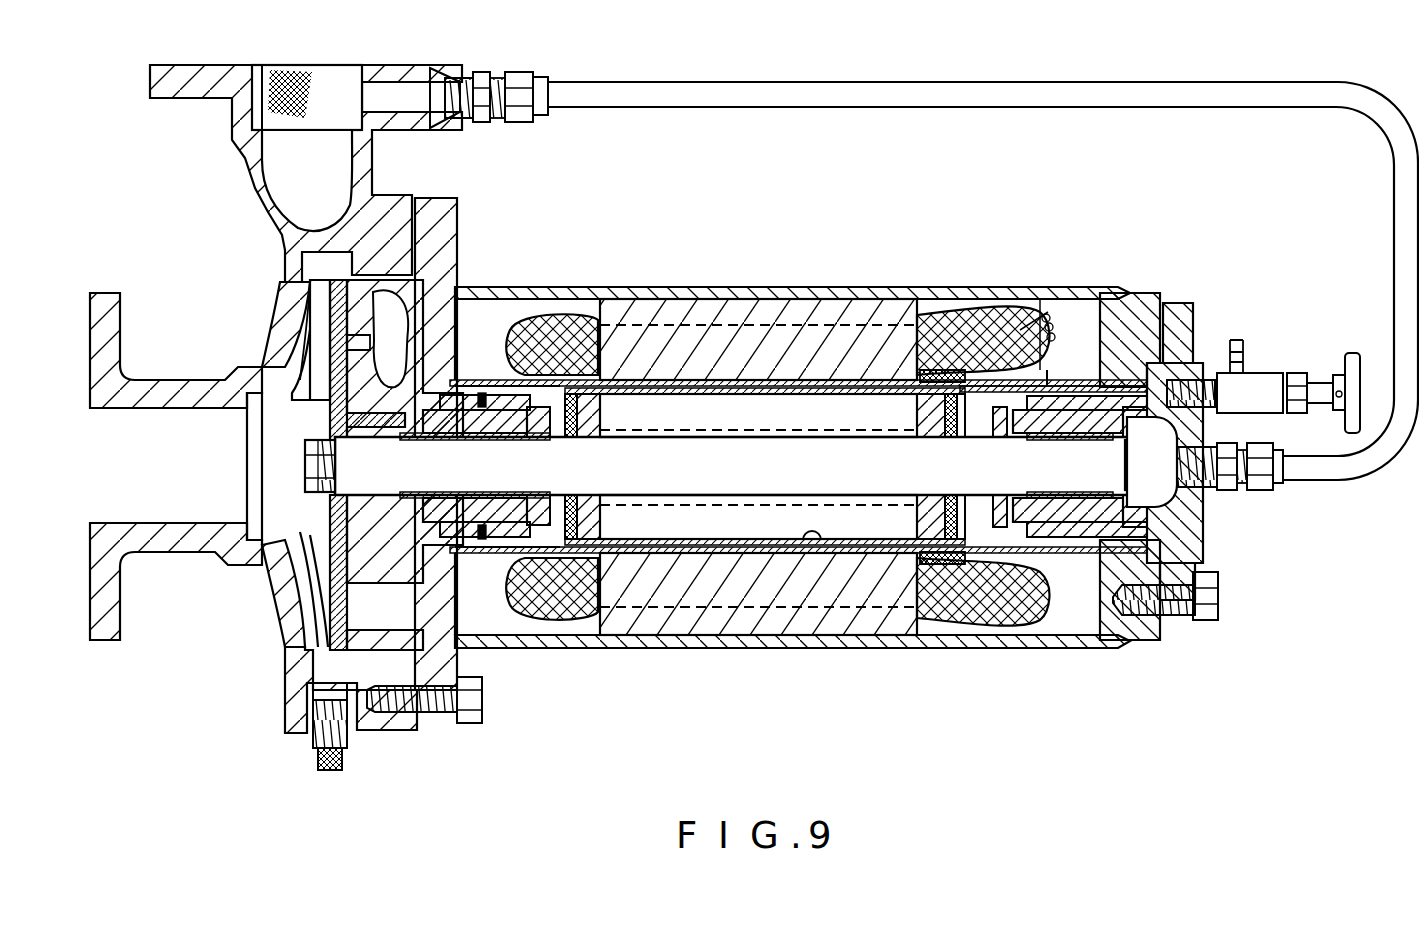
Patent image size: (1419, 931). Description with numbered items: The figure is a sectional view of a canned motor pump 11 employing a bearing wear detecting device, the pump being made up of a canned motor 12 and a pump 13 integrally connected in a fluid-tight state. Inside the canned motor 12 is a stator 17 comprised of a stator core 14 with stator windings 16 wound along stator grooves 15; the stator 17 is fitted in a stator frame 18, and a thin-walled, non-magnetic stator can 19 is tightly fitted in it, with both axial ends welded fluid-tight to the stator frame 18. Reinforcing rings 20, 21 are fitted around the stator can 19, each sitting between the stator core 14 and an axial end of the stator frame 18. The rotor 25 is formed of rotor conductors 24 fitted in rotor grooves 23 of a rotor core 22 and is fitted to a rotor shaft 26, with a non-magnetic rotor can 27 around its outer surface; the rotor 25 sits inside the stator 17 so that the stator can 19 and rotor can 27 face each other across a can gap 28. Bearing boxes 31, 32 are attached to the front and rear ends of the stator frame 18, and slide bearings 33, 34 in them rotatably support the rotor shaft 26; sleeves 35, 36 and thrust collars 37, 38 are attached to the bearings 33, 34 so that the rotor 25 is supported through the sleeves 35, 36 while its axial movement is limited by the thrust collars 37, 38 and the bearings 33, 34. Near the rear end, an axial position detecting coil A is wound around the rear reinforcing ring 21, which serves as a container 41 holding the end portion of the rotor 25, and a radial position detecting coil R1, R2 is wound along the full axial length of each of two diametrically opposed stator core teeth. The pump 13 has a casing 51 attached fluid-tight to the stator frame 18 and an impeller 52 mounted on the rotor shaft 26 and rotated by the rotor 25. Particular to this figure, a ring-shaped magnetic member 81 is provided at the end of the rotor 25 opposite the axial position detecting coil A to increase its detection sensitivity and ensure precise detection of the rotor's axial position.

The canned motor pump 11 is at (801, 66).
The canned motor 12 is at (796, 176).
The pump 13 is at (207, 245).
The stator core 14 is at (630, 300).
The stator grooves 15 is at (700, 325).
The stator windings 16 is at (588, 332).
The stator 17 is at (656, 242).
The stator frame 18 is at (742, 300).
The stator can 19 is at (775, 385).
The reinforcing ring 20 is at (503, 378).
The reinforcing ring 21 is at (1090, 385).
The rotor core 22 is at (696, 525).
The rotor grooves 23 is at (665, 510).
The rotor conductors 24 is at (724, 532).
The rotor 25 is at (742, 692).
The rotor shaft 26 is at (773, 485).
The rotor can 27 is at (813, 545).
The can gap 28 is at (838, 542).
The bearing box 31 is at (410, 400).
The bearing box 32 is at (1168, 525).
The bearing 33 is at (470, 515).
The bearing 34 is at (1058, 512).
The sleeve 35 is at (508, 540).
The sleeve 36 is at (1085, 528).
The thrust collar 37 is at (545, 525).
The thrust collar 38 is at (1000, 530).
The container 41 is at (1057, 385).
The casing 51 is at (276, 345).
The impeller 52 is at (312, 312).
The ring-shaped magnetic member 81 is at (992, 400).
The radial position detecting coil R1 is at (932, 368).
The axial position detecting coil A is at (965, 388).
The radial position detecting coil R2 is at (930, 565).